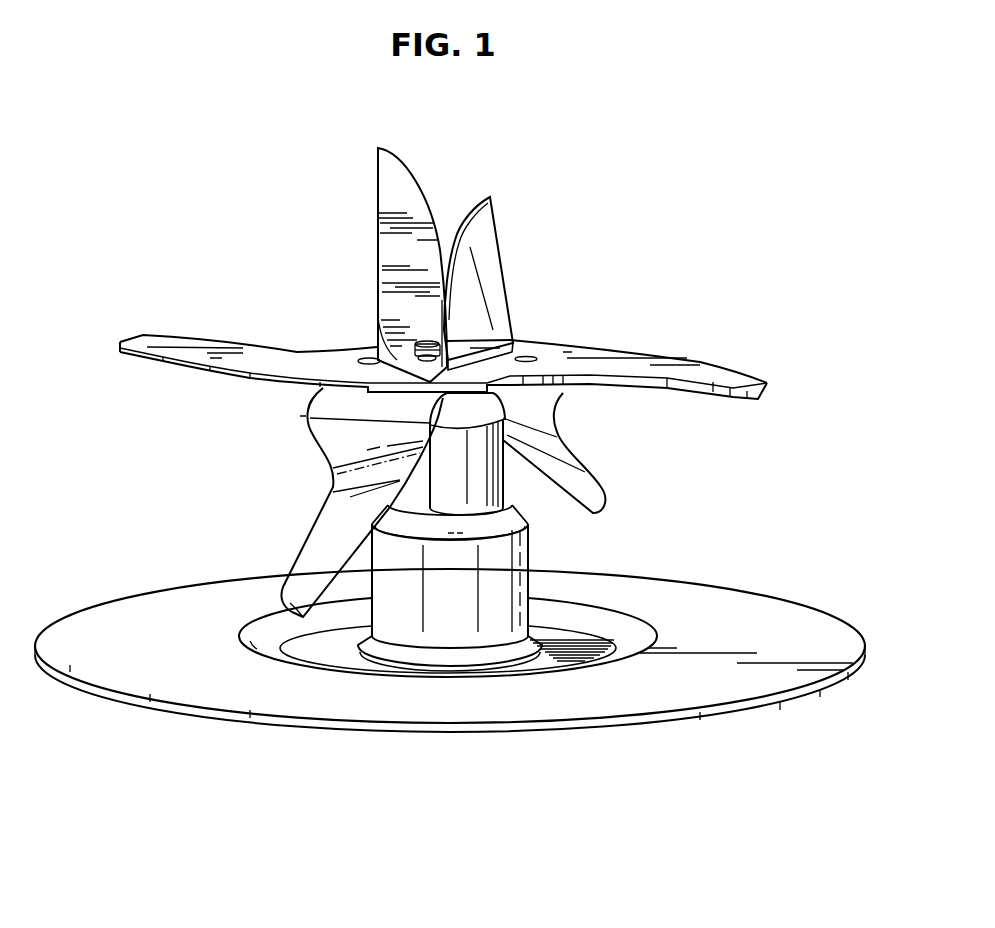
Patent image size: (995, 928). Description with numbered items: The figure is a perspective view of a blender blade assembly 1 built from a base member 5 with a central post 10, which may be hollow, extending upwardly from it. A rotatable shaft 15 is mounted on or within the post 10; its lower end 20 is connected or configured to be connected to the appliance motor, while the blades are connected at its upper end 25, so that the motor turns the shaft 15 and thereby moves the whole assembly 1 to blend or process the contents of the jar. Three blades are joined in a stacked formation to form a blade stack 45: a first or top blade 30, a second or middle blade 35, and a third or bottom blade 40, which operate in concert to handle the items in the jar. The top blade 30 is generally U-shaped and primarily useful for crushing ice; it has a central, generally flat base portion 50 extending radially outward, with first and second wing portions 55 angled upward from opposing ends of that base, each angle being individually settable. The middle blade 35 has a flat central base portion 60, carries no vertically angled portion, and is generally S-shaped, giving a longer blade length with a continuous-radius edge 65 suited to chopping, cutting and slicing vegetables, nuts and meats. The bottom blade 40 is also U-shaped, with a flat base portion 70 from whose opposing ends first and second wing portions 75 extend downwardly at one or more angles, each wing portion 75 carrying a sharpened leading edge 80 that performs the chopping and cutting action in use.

The blade assembly 1 is at (629, 208).
The base member 5 is at (560, 703).
The central post 10 is at (500, 600).
The rotatable shaft 15 is at (476, 466).
The lower end 20 is at (411, 689).
The upper end 25 is at (521, 403).
The first or top blade 30 is at (539, 259).
The second or middle blade 35 is at (667, 337).
The third or bottom blade 40 is at (333, 485).
The blade stack 45 is at (339, 322).
The central base portion 50 is at (402, 360).
The wing portions 55 is at (408, 202).
The central base portion 60 is at (307, 367).
The continuous-radius edge 65 is at (237, 363).
The base portion 70 is at (323, 390).
The wing portions 75 is at (600, 480).
The leading edge 80 is at (549, 505).